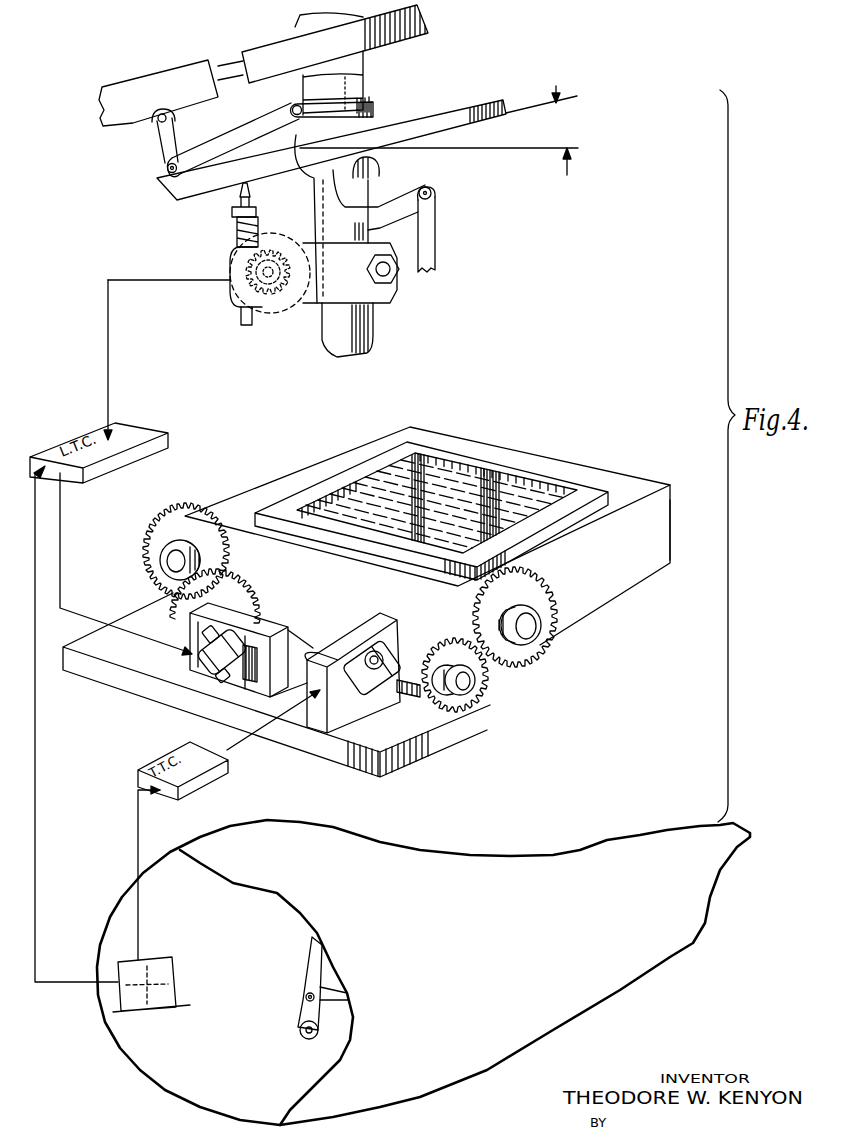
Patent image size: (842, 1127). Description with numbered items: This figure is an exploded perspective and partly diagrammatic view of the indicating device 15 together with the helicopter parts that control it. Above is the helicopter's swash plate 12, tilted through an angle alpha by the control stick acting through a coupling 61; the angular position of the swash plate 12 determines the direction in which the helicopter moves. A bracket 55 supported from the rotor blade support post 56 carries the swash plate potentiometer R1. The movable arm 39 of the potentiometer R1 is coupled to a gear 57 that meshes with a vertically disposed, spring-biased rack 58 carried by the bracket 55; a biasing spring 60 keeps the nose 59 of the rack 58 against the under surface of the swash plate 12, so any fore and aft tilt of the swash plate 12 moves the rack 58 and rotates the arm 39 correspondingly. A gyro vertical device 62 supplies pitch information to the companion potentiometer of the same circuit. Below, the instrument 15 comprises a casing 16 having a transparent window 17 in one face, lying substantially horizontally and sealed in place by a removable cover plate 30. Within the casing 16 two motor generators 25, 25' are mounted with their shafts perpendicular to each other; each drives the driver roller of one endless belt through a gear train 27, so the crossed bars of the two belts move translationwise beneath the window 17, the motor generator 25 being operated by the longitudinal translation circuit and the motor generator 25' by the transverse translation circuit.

The swash plate 12 is at (462, 105).
The indicating device 15 is at (601, 460).
The casing 16 is at (607, 587).
The transparent window 17 is at (443, 487).
The motor generator 25 is at (251, 646).
The motor generator 25' is at (362, 660).
The gear train 27 is at (152, 586).
The removable cover plate 30 is at (358, 453).
The movable arm 39 is at (288, 250).
The bracket 55 is at (357, 290).
The rotor blade support post 56 is at (376, 333).
The gear 57 is at (265, 313).
The spring-biased rack 58 is at (239, 315).
The nose 59 is at (234, 199).
The biasing spring 60 is at (234, 235).
The coupling 61 is at (437, 248).
The gyro vertical device 62 is at (200, 933).
The swash plate potentiometer R1 is at (292, 313).